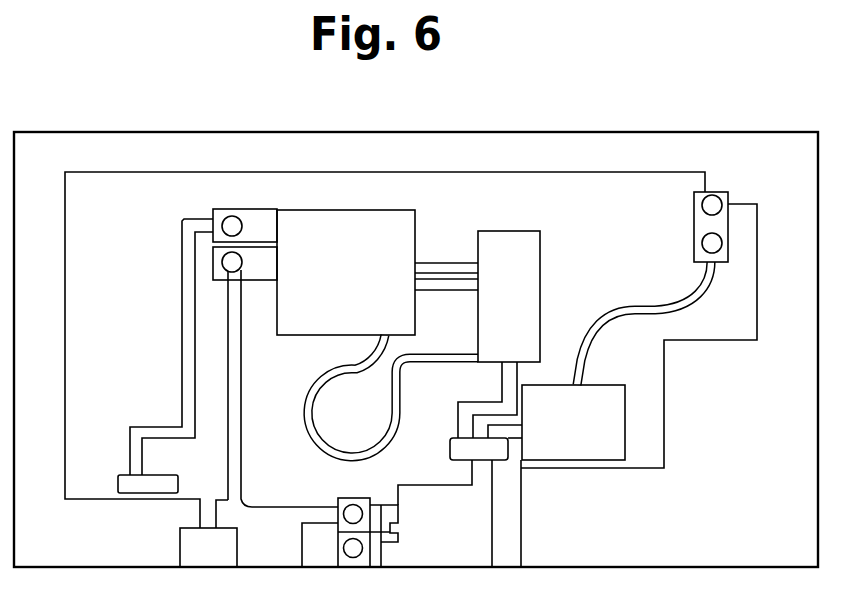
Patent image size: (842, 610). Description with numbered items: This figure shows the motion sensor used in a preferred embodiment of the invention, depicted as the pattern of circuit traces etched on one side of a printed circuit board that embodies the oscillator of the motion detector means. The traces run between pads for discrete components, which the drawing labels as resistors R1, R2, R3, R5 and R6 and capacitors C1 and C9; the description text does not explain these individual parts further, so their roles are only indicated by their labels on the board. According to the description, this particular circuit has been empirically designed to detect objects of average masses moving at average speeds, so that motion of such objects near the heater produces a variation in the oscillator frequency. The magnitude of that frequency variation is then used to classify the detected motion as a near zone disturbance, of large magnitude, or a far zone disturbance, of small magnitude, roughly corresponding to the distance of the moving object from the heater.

The resistor R1 is at (275, 377).
The resistor R2 is at (197, 335).
The resistor R3 is at (689, 227).
The resistor R5 is at (387, 513).
The resistor R6 is at (480, 345).
The capacitor C1 is at (208, 519).
The capacitor C9 is at (624, 385).